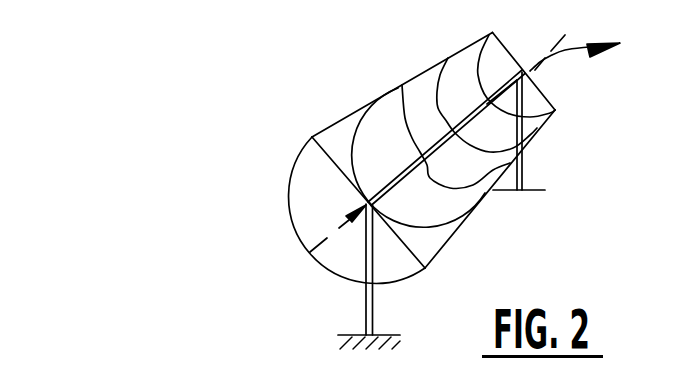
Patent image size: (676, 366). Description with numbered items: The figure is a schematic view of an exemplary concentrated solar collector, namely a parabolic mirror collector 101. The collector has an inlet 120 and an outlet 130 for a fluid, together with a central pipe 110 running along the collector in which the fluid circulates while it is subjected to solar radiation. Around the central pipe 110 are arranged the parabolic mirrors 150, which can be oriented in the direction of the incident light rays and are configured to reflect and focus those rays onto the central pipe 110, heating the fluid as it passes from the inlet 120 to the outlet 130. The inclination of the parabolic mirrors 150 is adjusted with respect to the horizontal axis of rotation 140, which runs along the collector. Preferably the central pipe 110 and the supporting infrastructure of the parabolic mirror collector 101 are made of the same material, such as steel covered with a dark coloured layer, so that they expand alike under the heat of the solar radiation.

The parabolic mirror collector 101 is at (210, 107).
The central pipe 110 is at (433, 150).
The inlet 120 is at (338, 252).
The outlet 130 is at (575, 64).
The horizontal axis of rotation 140 is at (303, 258).
The parabolic mirrors 150 is at (316, 184).